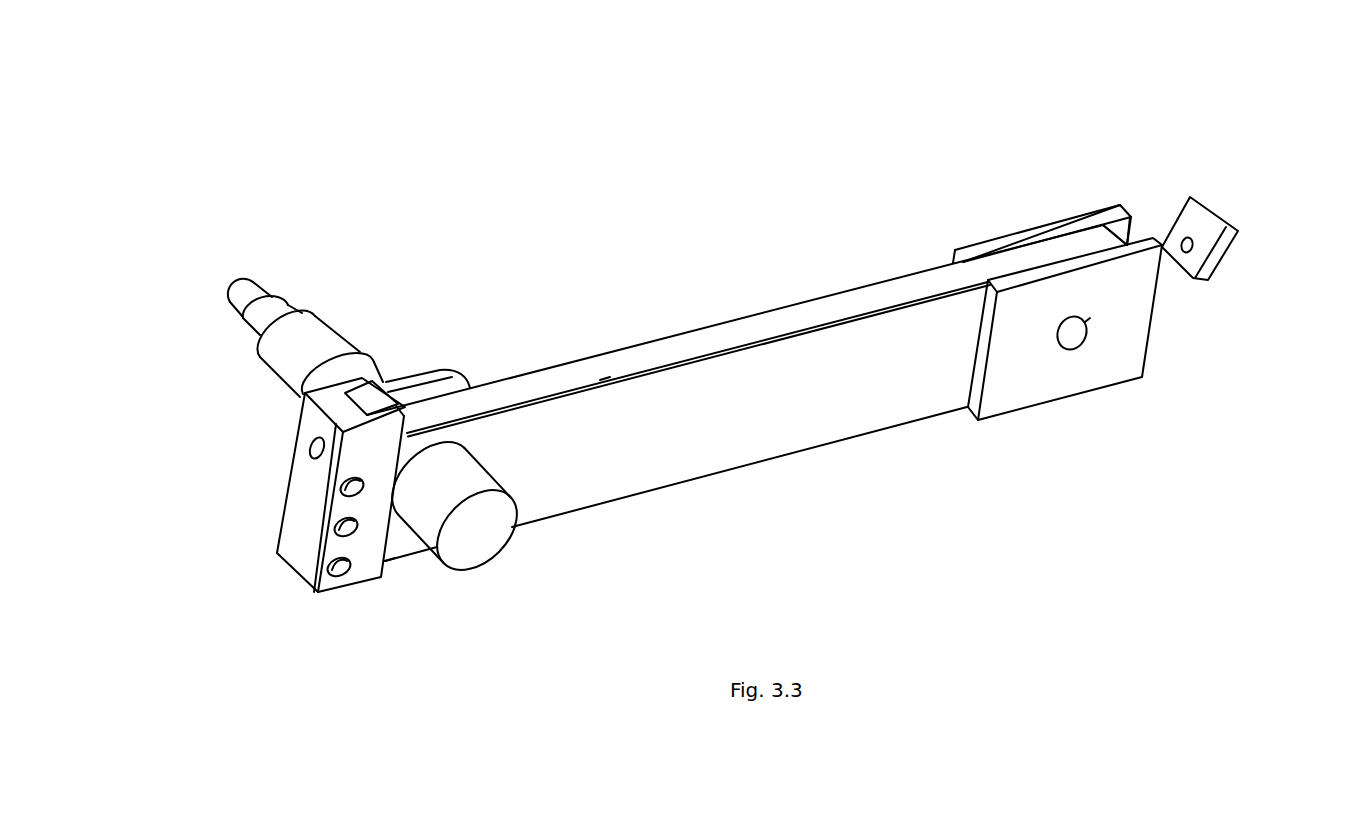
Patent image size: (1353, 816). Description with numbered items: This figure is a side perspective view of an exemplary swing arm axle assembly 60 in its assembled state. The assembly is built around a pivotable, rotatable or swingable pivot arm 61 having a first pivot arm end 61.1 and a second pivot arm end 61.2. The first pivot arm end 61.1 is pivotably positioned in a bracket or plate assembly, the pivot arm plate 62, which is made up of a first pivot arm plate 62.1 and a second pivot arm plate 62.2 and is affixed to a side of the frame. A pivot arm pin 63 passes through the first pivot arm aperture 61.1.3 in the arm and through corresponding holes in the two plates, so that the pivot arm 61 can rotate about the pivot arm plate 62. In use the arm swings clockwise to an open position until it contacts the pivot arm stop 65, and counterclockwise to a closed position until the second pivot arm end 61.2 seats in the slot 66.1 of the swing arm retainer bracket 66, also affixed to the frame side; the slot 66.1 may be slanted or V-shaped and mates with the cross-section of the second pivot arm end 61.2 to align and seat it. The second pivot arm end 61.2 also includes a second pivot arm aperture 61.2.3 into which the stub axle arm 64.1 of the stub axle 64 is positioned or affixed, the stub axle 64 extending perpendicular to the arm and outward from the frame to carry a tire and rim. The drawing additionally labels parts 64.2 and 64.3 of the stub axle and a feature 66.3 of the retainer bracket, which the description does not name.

The swing arm axle assembly 60 is at (850, 107).
The pivot arm 61 is at (730, 415).
The first pivot arm end 61.1 is at (1104, 184).
The first pivot arm aperture 61.1.3 is at (1087, 320).
The second pivot arm end 61.2 is at (384, 588).
The second pivot arm aperture 61.2.3 is at (453, 482).
The pivot arm plate 62 is at (1041, 233).
The first pivot arm plate 62.1 is at (983, 247).
The second pivot arm plate 62.2 is at (1095, 377).
The pivot arm pin 63 is at (1065, 340).
The stub axle 64 is at (357, 276).
The stub axle arm 64.1 is at (485, 460).
The lever pin 64.2 is at (453, 383).
The lever handle 64.3 is at (257, 324).
The pivot arm stop 65 is at (1197, 228).
The swing arm retainer bracket 66 is at (280, 590).
The slot 66.1 is at (368, 401).
The hole in clamping block 66.3 is at (312, 445).